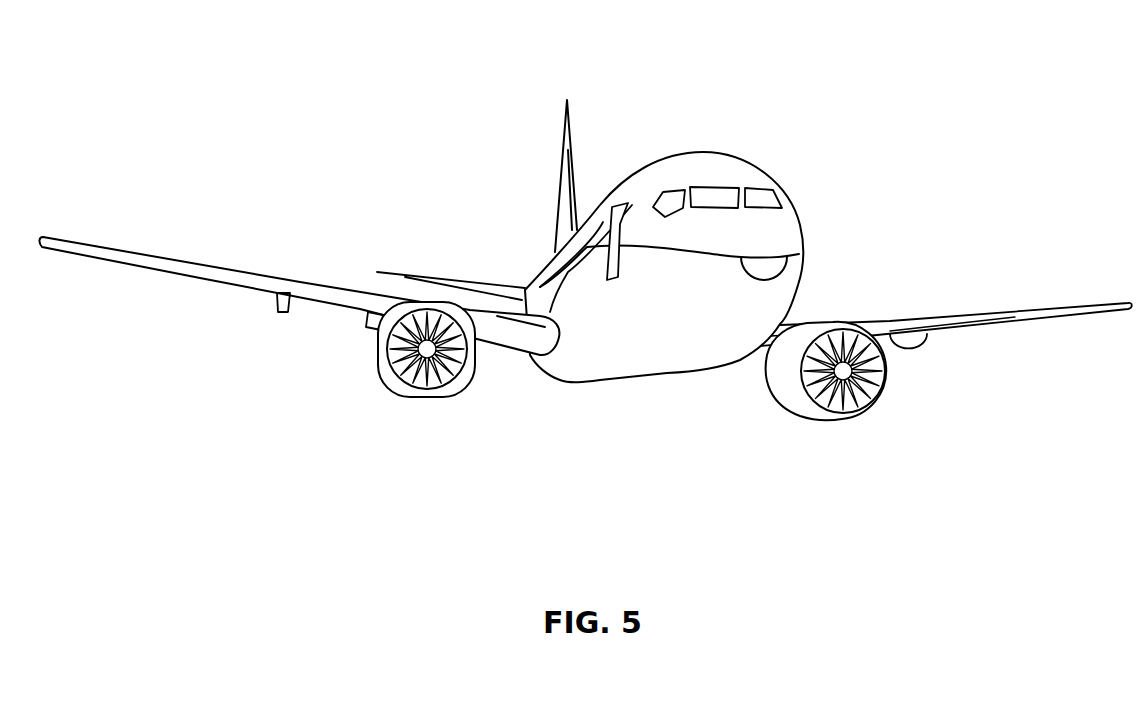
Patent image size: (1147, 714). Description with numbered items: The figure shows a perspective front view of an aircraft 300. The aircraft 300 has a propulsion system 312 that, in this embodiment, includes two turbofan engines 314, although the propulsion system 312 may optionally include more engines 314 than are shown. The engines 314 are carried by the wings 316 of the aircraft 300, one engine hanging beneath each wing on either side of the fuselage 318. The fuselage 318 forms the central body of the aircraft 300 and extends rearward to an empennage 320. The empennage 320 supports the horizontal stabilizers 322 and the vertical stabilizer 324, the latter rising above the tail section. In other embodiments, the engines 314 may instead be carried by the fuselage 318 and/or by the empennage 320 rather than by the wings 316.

The aircraft 300 is at (311, 38).
The propulsion system 312 is at (944, 412).
The turbofan engines 314 is at (427, 398).
The wings 316 is at (187, 262).
The fuselage 318 is at (800, 220).
The empennage 320 is at (553, 258).
The horizontal stabilizers 322 is at (420, 278).
The vertical stabilizer 324 is at (562, 144).